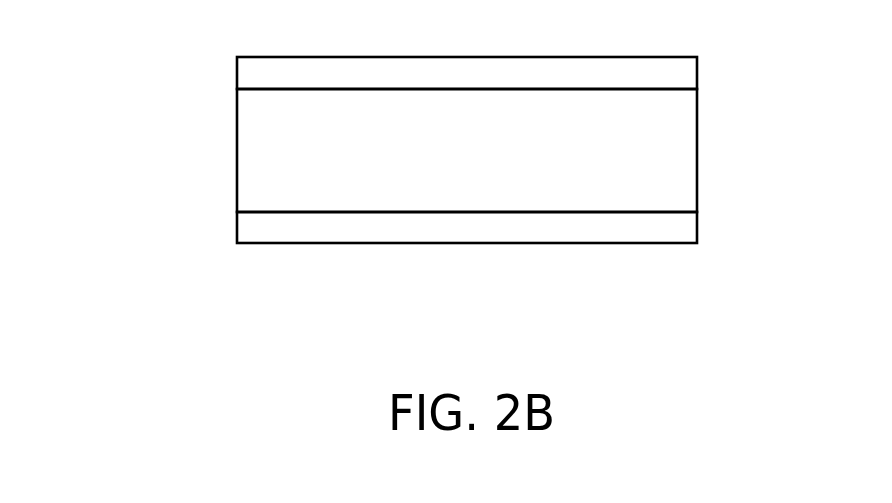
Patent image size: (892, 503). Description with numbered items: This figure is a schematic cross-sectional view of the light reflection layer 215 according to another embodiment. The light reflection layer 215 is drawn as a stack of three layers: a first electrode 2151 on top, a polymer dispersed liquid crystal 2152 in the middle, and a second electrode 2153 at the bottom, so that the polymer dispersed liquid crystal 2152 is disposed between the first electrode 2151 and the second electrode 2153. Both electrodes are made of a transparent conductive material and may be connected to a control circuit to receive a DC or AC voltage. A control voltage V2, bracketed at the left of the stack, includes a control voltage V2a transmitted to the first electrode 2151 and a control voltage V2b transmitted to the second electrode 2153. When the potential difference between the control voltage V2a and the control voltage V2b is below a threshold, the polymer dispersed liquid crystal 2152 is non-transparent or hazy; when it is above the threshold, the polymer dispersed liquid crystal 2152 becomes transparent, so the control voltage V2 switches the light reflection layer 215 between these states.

The light reflection layer 215 is at (525, 189).
The first electrode 2151 is at (670, 74).
The polymer dispersed liquid crystal 2152 is at (670, 154).
The second electrode 2153 is at (670, 229).
The control voltage V2 is at (101, 67).
The control voltage V2a is at (236, 72).
The control voltage V2b is at (236, 227).